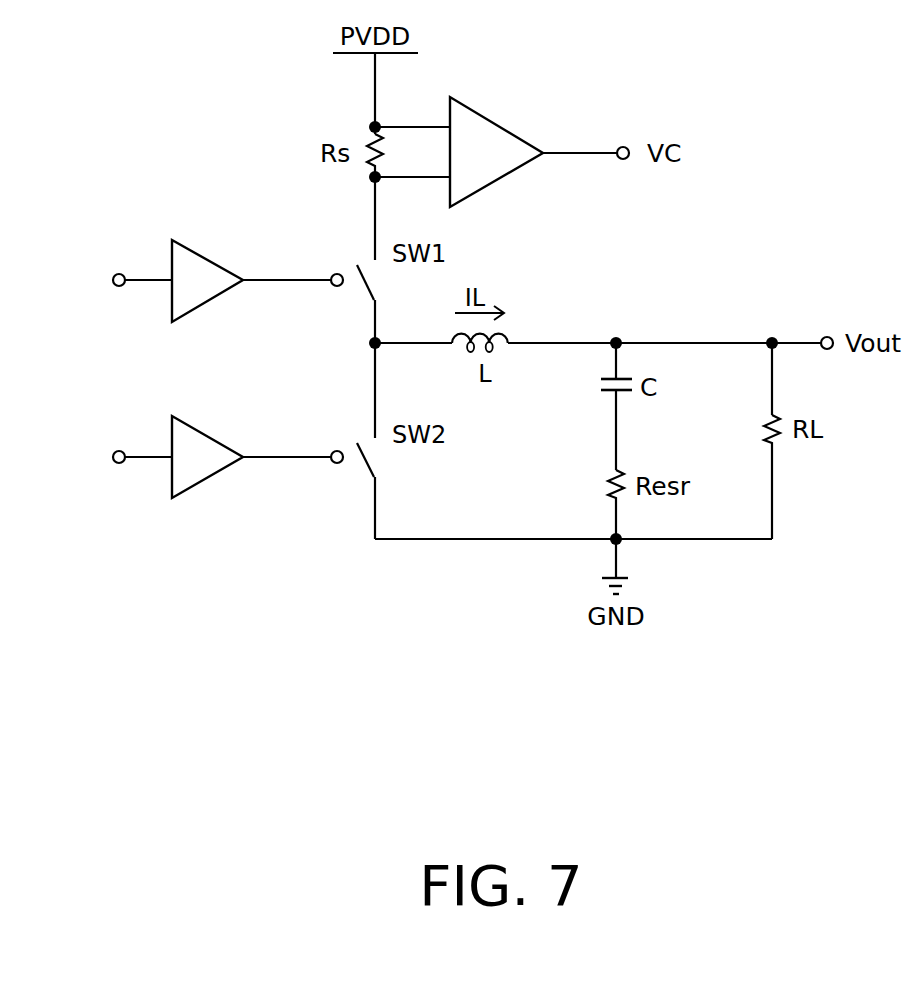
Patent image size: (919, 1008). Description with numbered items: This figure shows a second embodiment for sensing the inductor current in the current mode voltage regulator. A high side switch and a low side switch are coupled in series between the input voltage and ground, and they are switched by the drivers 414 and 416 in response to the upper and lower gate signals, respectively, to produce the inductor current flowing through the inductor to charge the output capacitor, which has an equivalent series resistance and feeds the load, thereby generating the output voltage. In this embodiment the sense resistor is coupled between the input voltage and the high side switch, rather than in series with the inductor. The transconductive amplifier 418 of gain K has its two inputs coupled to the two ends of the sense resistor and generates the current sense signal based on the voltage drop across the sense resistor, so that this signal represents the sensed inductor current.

The driver 414 is at (207, 258).
The driver 416 is at (207, 434).
The transconductive amplifier 418 is at (496, 122).